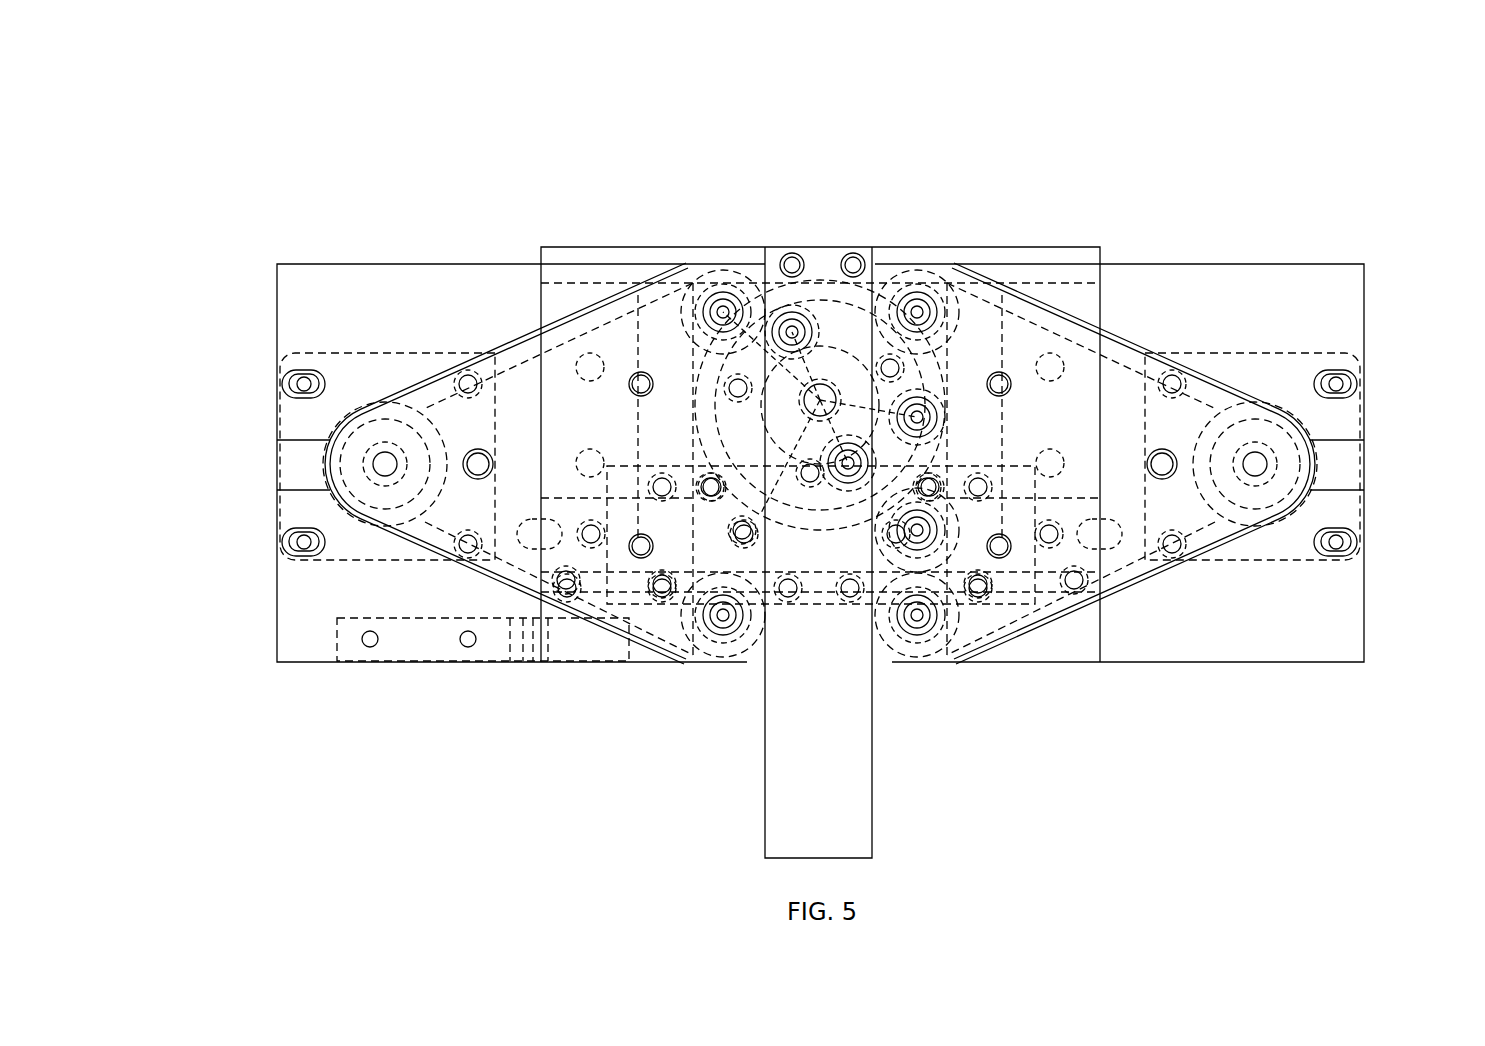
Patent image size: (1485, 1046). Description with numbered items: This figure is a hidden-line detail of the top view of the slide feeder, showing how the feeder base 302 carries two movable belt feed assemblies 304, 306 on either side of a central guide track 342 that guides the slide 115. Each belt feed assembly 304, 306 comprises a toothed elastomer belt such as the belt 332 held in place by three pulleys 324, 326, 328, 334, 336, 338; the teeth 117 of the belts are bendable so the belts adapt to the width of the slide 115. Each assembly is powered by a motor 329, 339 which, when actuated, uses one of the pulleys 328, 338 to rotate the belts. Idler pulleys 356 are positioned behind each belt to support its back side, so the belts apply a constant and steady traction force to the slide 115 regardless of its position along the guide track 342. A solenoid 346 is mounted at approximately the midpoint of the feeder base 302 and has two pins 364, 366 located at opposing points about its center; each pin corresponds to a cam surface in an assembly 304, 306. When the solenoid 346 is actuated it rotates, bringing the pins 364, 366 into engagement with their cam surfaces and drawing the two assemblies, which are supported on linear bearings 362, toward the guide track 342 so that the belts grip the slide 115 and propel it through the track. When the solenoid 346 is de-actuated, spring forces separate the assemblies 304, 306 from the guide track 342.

The slide 115 is at (842, 740).
The tooth 117 is at (1203, 388).
The feeder base 302 is at (755, 262).
The movable belt feed assembly 304 is at (1115, 395).
The movable belt feed assembly 306 is at (585, 348).
The pulley 324 is at (925, 645).
The pulley 326 is at (922, 300).
The pulley 328 is at (1312, 440).
The motor 329 is at (1352, 430).
The belt 332 is at (510, 357).
The pulley 334 is at (708, 627).
The pulley 336 is at (675, 330).
The pulley 338 is at (325, 472).
The motor 339 is at (335, 363).
The guide track 342 is at (720, 290).
The solenoid 346 is at (735, 442).
The idler pulley 356 is at (955, 395).
The linear bearing 362 is at (1068, 578).
The pin 364 is at (800, 310).
The pin 366 is at (855, 465).